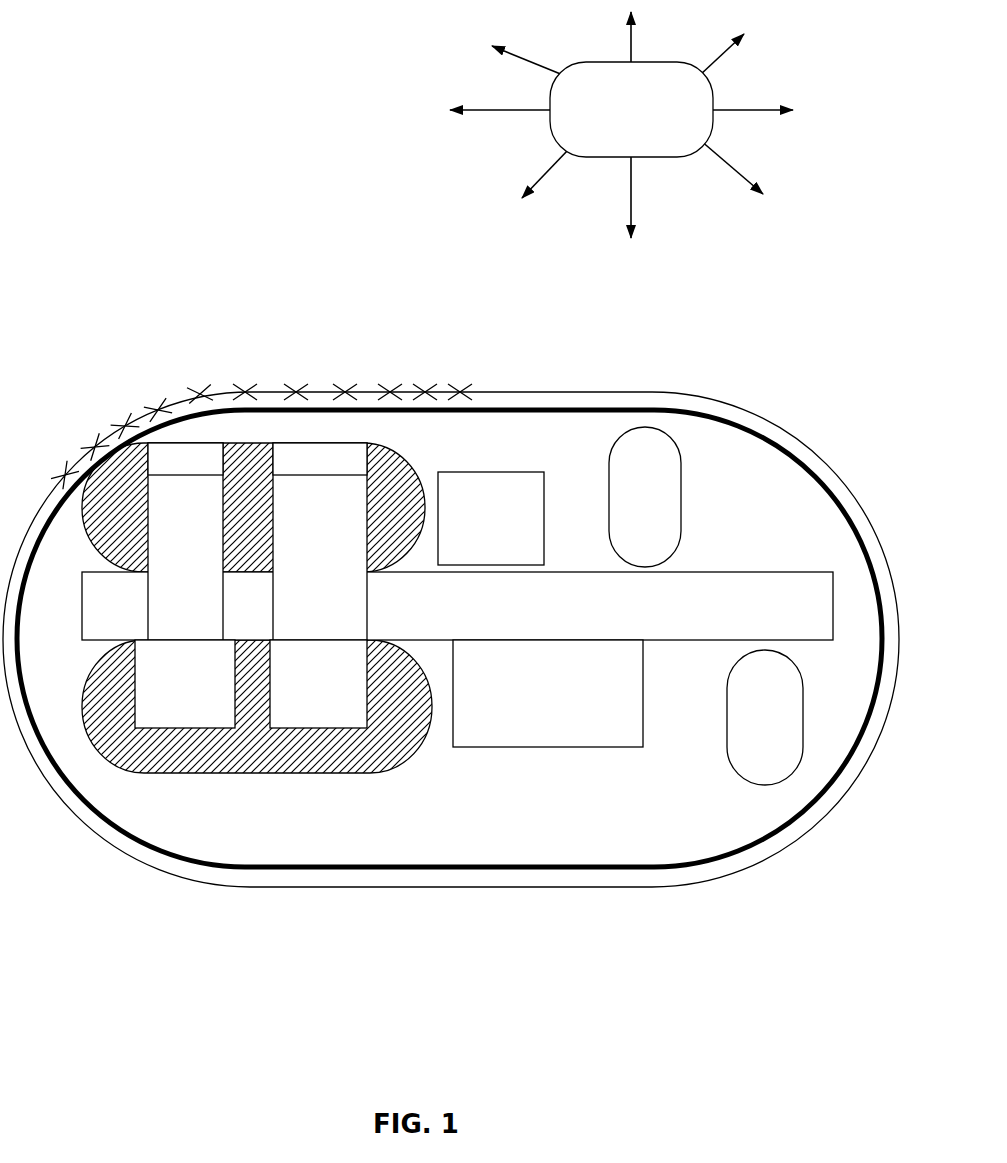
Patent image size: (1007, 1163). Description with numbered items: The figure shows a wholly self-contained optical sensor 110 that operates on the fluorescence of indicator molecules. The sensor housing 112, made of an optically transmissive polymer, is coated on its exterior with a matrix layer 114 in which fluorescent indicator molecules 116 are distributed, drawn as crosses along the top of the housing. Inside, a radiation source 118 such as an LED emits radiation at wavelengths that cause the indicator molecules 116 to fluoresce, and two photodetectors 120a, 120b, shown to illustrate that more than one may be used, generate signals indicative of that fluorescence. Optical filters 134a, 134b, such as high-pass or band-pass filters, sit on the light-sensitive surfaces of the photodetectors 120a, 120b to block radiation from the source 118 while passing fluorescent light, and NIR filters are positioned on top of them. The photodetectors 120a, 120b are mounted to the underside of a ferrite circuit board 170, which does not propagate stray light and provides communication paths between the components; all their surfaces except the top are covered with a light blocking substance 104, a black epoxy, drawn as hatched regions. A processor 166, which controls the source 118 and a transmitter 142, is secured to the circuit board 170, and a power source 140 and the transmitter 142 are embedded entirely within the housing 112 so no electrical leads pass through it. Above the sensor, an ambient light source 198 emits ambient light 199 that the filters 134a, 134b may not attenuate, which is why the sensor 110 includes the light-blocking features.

The optical sensor 110 is at (256, 279).
The sensor housing 112 is at (568, 409).
The matrix layer 114 is at (698, 395).
The fluorescent indicator molecules 116 is at (246, 391).
The light blocking substance 104 is at (392, 480).
The optical filter 134a is at (185, 541).
The optical filter 134b is at (320, 541).
The radiation source 118 is at (535, 514).
The photodetector 120a is at (146, 683).
The photodetector 120b is at (318, 723).
The power source 140 is at (665, 468).
The transmitter 142 is at (741, 718).
The processor 166 is at (630, 695).
The circuit board 170 is at (746, 571).
The ambient light source 198 is at (631, 109).
The ambient light 199 is at (542, 176).